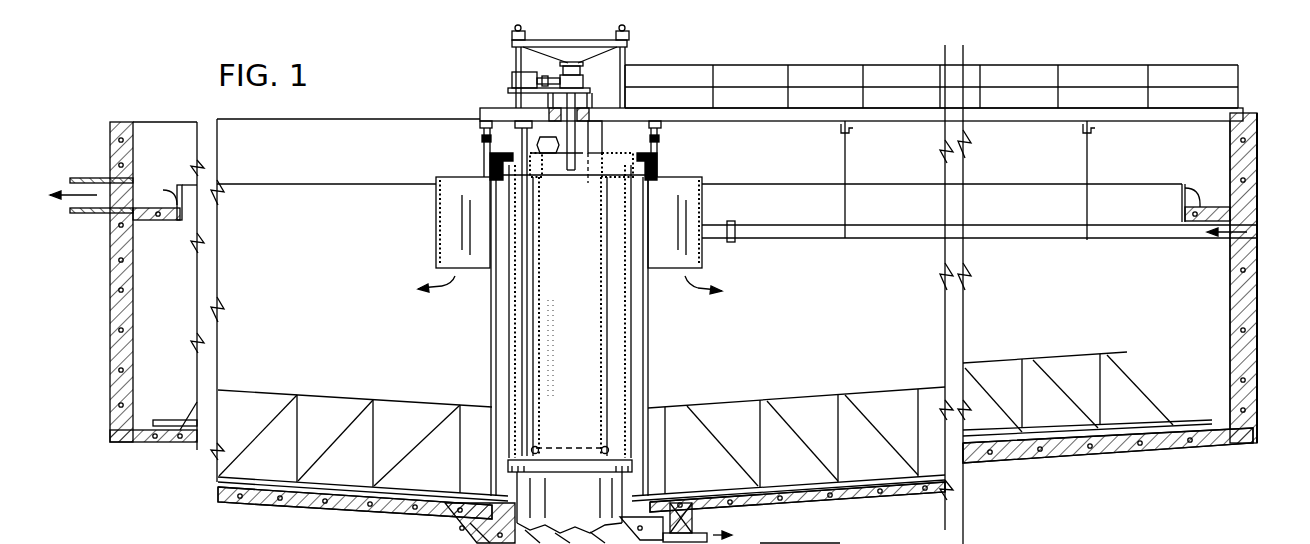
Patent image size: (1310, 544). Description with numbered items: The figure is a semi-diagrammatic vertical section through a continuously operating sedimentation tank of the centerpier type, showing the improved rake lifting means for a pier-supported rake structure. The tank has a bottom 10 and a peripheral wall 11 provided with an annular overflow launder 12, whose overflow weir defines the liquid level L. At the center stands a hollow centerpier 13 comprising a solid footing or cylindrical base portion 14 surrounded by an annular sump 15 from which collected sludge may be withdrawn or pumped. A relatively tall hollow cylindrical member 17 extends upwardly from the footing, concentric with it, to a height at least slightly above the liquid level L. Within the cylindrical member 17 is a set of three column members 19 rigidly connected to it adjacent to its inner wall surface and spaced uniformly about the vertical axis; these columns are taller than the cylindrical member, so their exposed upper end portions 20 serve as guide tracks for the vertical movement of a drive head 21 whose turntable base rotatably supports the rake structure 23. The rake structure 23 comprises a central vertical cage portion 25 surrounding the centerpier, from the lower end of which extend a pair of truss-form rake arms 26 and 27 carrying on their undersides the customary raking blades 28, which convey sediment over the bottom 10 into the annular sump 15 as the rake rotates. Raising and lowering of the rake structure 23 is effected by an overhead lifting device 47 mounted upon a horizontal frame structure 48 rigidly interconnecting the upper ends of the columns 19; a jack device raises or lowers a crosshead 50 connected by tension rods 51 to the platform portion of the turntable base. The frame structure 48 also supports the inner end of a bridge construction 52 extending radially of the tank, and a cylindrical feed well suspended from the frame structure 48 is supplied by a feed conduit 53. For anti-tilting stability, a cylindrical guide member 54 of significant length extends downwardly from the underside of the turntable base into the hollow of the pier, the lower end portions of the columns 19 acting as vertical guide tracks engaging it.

The bottom 10 is at (167, 467).
The peripheral wall 11 is at (110, 304).
The annular overflow launder 12 is at (150, 203).
The hollow centerpier 13 is at (508, 338).
The cylindrical base portion 14 is at (542, 503).
The annular sump 15 is at (474, 534).
The hollow cylindrical member 17 is at (508, 269).
The column members 19 is at (523, 248).
The exposed upper end portions 20 is at (482, 143).
The drive head 21 is at (633, 145).
The rake structure 23 is at (492, 400).
The central vertical cage portion 25 is at (650, 326).
The rake arm 26 is at (340, 392).
The rake arm 27 is at (788, 398).
The raking blades 28 is at (823, 487).
The overhead lifting device 47 is at (585, 83).
The horizontal frame structure 48 is at (497, 108).
The crosshead 50 is at (513, 42).
The tension rods 51 is at (817, 536).
The bridge construction 52 is at (780, 124).
The feed conduit 53 is at (814, 236).
The cylindrical guide member 54 is at (540, 332).
The liquid level L is at (327, 171).